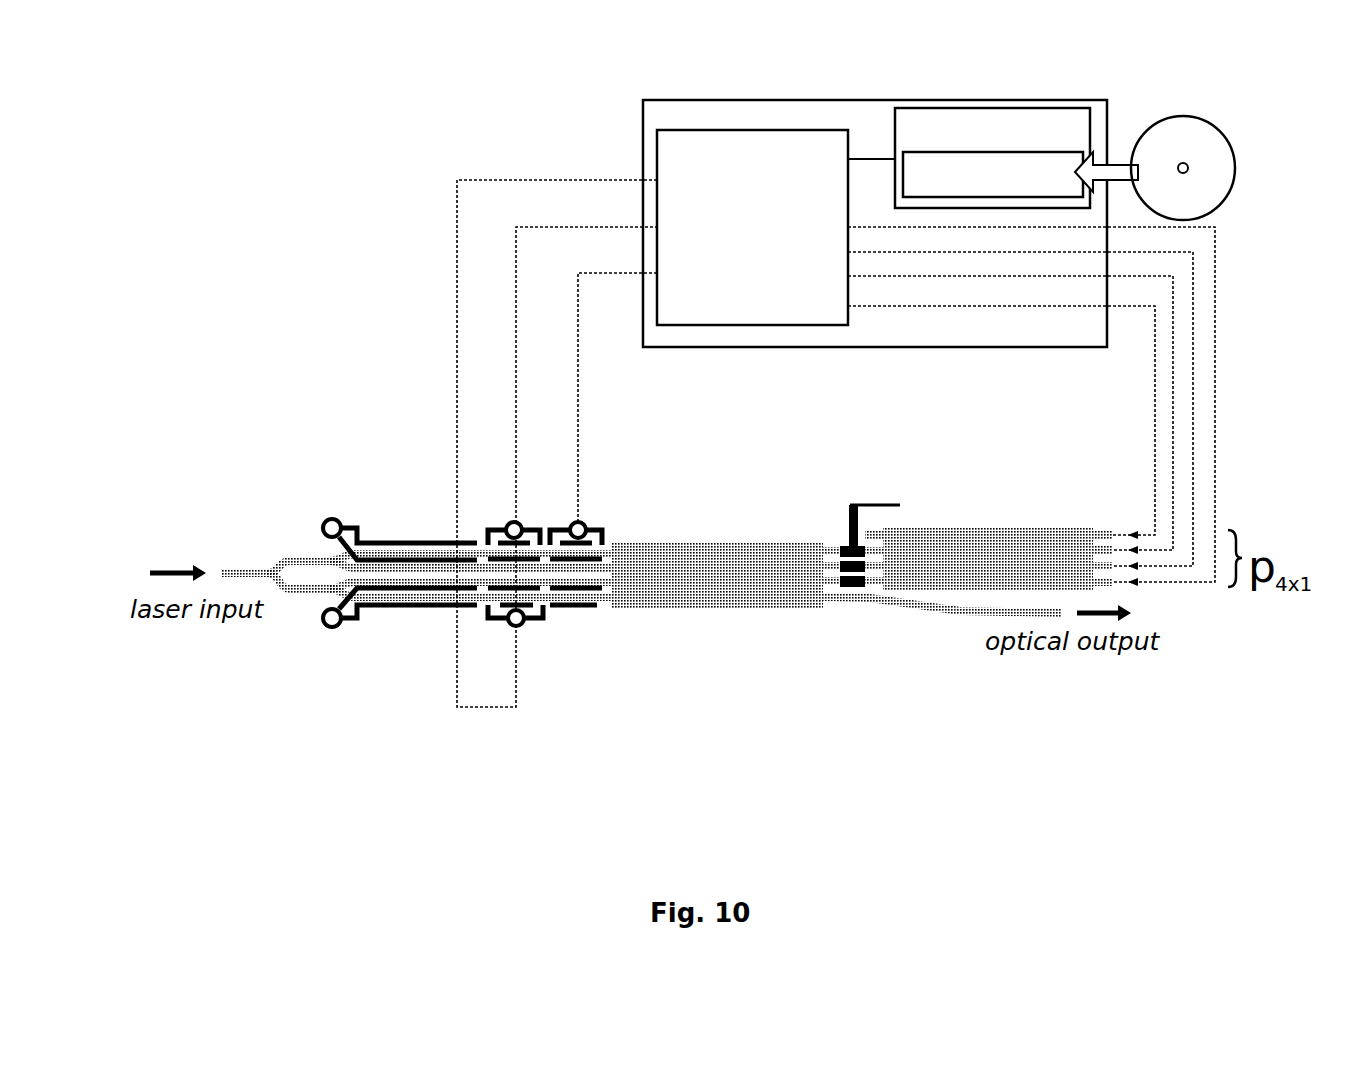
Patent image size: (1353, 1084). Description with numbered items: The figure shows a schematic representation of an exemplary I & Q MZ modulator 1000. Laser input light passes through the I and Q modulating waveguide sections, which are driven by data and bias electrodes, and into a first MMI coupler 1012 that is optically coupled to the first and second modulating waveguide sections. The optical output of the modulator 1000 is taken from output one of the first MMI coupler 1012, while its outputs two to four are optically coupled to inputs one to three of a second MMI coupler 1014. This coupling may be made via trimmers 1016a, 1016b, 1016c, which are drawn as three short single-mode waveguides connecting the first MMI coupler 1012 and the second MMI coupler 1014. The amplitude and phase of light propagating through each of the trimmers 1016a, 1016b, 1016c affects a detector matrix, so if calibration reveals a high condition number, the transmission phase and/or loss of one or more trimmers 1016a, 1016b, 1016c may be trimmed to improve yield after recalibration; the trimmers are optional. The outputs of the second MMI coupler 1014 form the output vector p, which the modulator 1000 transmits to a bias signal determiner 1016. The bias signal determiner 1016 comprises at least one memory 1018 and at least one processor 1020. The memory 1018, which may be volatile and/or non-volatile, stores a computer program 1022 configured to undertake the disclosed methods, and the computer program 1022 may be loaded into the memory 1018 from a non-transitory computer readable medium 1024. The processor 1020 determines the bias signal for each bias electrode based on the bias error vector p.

The I & Q MZ modulator 1000 is at (667, 646).
The first MMI coupler 1012 is at (727, 597).
The second MMI coupler 1014 is at (935, 592).
The bias signal determiner 1016 is at (875, 223).
The trimmer 1016a is at (845, 550).
The trimmer 1016b is at (852, 560).
The trimmer 1016c is at (852, 588).
The memory 1018 is at (992, 158).
The processor 1020 is at (752, 227).
The computer program 1022 is at (993, 174).
The non-transitory computer readable medium 1024 is at (1183, 168).